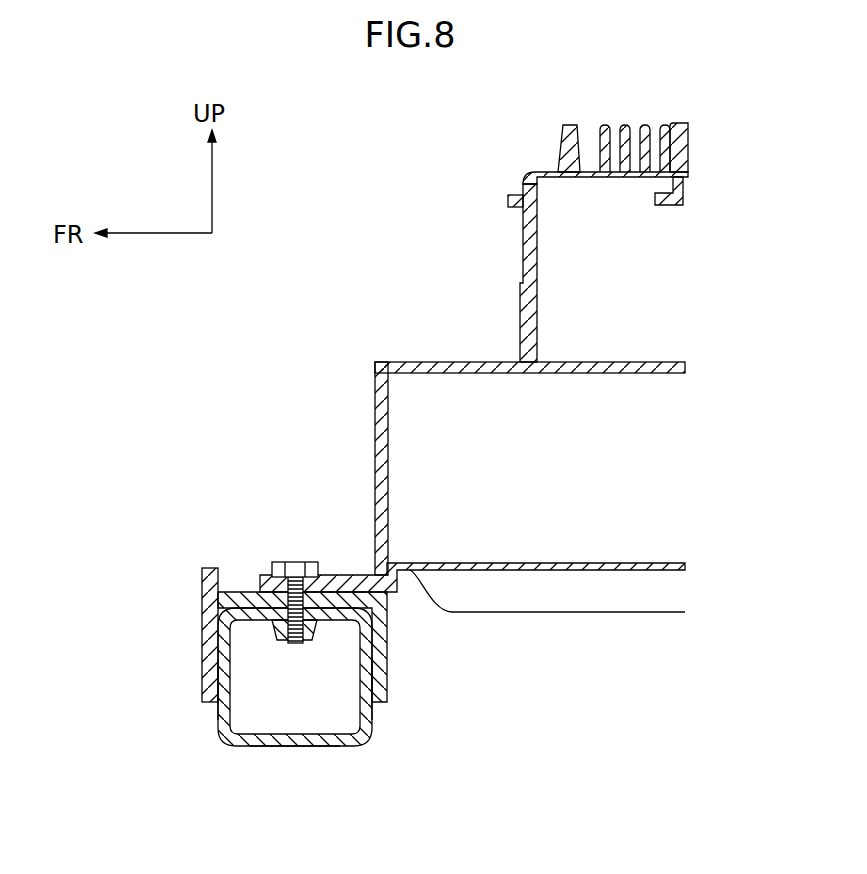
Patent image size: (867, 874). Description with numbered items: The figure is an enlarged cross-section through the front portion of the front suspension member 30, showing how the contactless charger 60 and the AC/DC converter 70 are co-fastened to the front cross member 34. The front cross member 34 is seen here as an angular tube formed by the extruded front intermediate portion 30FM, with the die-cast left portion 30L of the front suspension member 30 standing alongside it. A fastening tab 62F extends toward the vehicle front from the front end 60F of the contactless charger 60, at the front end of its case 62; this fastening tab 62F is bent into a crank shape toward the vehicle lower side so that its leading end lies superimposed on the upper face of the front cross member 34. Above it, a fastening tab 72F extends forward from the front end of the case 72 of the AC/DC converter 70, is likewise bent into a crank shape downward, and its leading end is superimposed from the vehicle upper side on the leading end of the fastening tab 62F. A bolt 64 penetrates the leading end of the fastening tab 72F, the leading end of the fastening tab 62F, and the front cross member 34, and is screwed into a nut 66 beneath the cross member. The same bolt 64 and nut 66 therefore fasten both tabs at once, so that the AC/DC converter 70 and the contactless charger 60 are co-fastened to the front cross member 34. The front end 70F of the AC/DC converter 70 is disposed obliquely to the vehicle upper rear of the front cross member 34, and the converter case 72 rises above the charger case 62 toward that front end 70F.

The front suspension member 30 is at (203, 768).
The left portion 30L is at (201, 615).
The front intermediate portion 30FM is at (333, 746).
The front cross member 34 is at (275, 758).
The contactless charger 60 is at (572, 630).
The front end of floor cross member 60F is at (455, 563).
The case 62 is at (545, 563).
The fastening tabs 62F is at (345, 598).
The bolts 64 is at (296, 562).
The nuts 66 is at (274, 633).
The AC/DC converter 70 is at (623, 382).
The front end 70F is at (535, 171).
The case 72 is at (520, 264).
The fastening tabs 72F is at (377, 462).